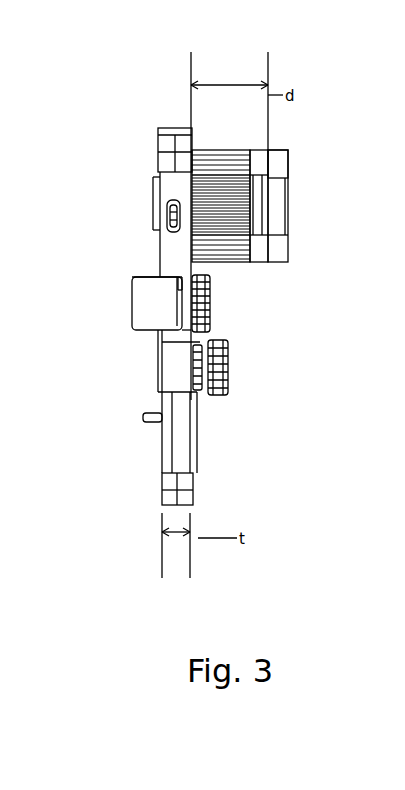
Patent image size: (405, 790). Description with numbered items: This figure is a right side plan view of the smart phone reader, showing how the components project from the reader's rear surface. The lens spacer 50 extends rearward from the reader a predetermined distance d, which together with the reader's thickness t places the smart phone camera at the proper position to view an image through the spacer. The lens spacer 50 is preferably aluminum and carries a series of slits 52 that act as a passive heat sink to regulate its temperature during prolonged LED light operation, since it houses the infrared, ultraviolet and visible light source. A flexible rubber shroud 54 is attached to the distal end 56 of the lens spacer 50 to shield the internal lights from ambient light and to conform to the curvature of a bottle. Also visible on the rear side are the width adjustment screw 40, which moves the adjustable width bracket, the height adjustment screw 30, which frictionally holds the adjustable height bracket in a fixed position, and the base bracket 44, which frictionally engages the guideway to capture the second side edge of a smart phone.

The height adjustment screw 30 is at (229, 362).
The width adjustment screw 40 is at (211, 313).
The base bracket 44 is at (133, 314).
The lens spacer 50 is at (290, 258).
The slits 52 is at (236, 222).
The shroud 54 is at (288, 153).
The distal end 56 is at (272, 143).